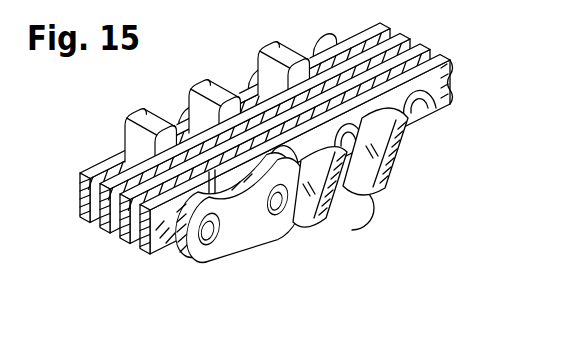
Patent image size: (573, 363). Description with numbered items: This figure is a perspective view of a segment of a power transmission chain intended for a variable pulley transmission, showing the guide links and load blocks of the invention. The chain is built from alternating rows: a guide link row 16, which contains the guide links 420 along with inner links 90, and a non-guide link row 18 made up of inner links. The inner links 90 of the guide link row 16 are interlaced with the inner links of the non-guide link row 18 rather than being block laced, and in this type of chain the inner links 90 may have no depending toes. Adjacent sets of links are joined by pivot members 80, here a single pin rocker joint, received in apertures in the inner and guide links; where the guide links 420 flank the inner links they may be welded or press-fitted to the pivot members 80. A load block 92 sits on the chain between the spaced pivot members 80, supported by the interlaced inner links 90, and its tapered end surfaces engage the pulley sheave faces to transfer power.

The guide link row 16 is at (266, 263).
The non-guide link row 18 is at (337, 228).
The pivot member 80 is at (208, 237).
The inner link 90 is at (163, 253).
The load block 92 is at (372, 182).
The guide link 420 is at (218, 254).